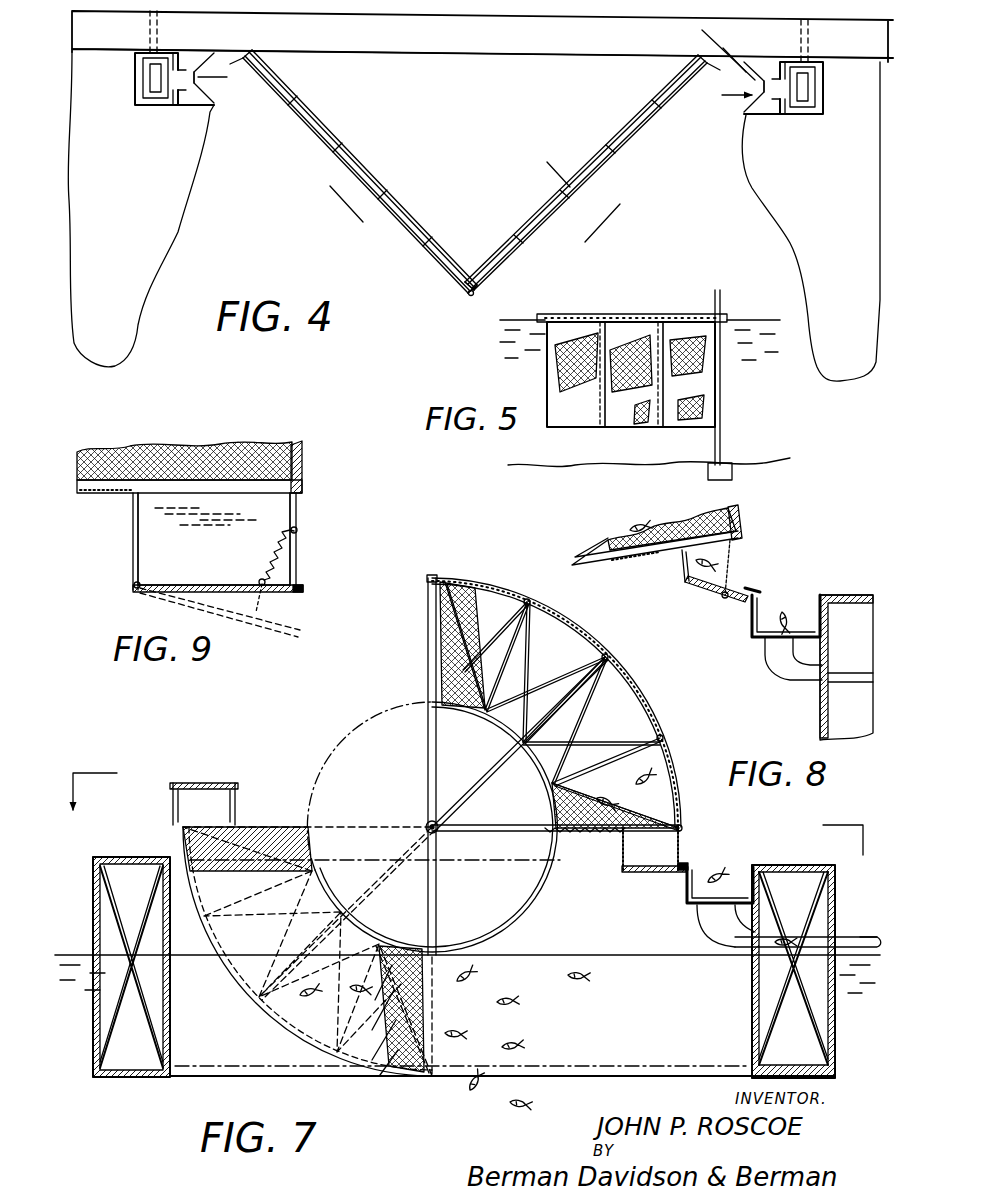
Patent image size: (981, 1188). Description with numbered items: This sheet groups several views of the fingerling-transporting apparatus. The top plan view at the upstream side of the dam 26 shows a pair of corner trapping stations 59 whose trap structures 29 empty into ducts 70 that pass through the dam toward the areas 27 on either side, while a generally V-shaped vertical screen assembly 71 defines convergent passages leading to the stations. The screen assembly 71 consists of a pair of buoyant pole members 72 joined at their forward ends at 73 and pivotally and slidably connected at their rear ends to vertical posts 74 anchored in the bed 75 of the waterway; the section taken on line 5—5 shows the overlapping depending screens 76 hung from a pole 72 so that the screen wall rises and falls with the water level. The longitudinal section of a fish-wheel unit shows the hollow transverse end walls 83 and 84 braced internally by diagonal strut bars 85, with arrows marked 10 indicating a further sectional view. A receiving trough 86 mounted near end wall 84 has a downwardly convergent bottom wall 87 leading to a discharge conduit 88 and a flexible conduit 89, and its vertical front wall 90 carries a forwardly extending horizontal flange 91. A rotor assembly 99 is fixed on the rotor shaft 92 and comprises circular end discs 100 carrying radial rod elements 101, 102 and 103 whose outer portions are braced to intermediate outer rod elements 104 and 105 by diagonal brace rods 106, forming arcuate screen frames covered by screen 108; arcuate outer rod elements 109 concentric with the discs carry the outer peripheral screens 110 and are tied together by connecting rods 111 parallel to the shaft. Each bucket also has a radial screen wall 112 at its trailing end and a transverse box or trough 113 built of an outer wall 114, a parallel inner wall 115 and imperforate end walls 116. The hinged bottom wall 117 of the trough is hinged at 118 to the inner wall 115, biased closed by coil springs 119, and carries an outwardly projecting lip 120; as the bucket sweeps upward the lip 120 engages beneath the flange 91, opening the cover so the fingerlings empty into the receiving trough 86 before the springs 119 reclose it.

In FIG. 4, the section line / direction arrows 5 is at (476, 136).
In FIG. 7, the fish passage apparatus 10 is at (467, 828).
In FIG. 4, the dam 26 is at (567, 50).
In FIG. 4, the bank 27 is at (120, 266).
In FIG. 4, the bracket 29 is at (157, 105).
In FIG. 4, the corner trapping station 59 is at (220, 112).
In FIG. 4, the duct 70 is at (160, 47).
In FIG. 4, the V-shaped vertical screen assembly 71 is at (463, 302).
In FIG. 4, the buoyant rod or pole member 72 is at (506, 220).
In FIG. 5, the buoyant rod or pole member 72 is at (540, 316).
In FIG. 4, the connection point 73 is at (472, 299).
In FIG. 4, the vertical post 74 is at (233, 66).
In FIG. 5, the vertical post 74 is at (722, 306).
In FIG. 5, the bed of the waterway 75 is at (768, 463).
In FIG. 5, the depending screen 76 is at (668, 335).
In FIG. 7, the hollow transverse end wall 83 is at (106, 858).
In FIG. 8, the hollow transverse end wall 84 is at (842, 599).
In FIG. 7, the hollow transverse end wall 84 is at (787, 867).
In FIG. 7, the diagonal strut bar 85 is at (148, 921).
In FIG. 8, the receiving trough 86 is at (808, 598).
In FIG. 7, the receiving trough 86 is at (693, 904).
In FIG. 7, the bottom wall 87 is at (700, 937).
In FIG. 8, the discharge conduit 88 is at (803, 682).
In FIG. 7, the discharge conduit 88 is at (750, 950).
In FIG. 7, the flexible conduit 89 is at (873, 937).
In FIG. 8, the vertical front wall 90 is at (754, 627).
In FIG. 8, the horizontal flange 91 is at (746, 592).
In FIG. 7, the horizontal flange 91 is at (688, 867).
In FIG. 7, the rotor shaft 92 is at (426, 826).
In FIG. 7, the rotor assembly 99 is at (432, 574).
In FIG. 7, the circular end disc 100 is at (360, 737).
In FIG. 7, the radial rod element 101 is at (438, 772).
In FIG. 7, the radial rod element 102 is at (485, 780).
In FIG. 7, the radial rod element 103 is at (515, 830).
In FIG. 7, the intermediate outer rod element 104 is at (526, 599).
In FIG. 7, the intermediate outer rod element 105 is at (640, 742).
In FIG. 7, the diagonal brace rod 106 is at (487, 632).
In FIG. 9, the screen 108 is at (256, 464).
In FIG. 8, the screen 108 is at (683, 532).
In FIG. 7, the screen 108 is at (453, 594).
In FIG. 7, the arcuate outer rod element 109 is at (603, 720).
In FIG. 9, the outer peripheral screen 110 is at (303, 464).
In FIG. 8, the outer peripheral screen 110 is at (740, 509).
In FIG. 7, the outer peripheral screen 110 is at (553, 637).
In FIG. 7, the connecting rod 111 is at (603, 665).
In FIG. 9, the radial screen wall 112 is at (82, 494).
In FIG. 7, the radial screen wall 112 is at (250, 827).
In FIG. 9, the box or trough 113 is at (306, 515).
In FIG. 8, the box or trough 113 is at (681, 583).
In FIG. 7, the box or trough 113 is at (222, 794).
In FIG. 9, the outer wall 114 is at (290, 506).
In FIG. 9, the inner wall 115 is at (134, 535).
In FIG. 9, the end wall 116 is at (195, 553).
In FIG. 9, the hinged bottom wall 117 is at (206, 587).
In FIG. 8, the hinged bottom wall 117 is at (708, 603).
In FIG. 7, the hinged bottom wall 117 is at (200, 786).
In FIG. 9, the hinge connection 118 is at (136, 589).
In FIG. 9, the coil spring 119 is at (270, 551).
In FIG. 8, the coil spring 119 is at (740, 564).
In FIG. 9, the front lip or margin 120 is at (305, 587).